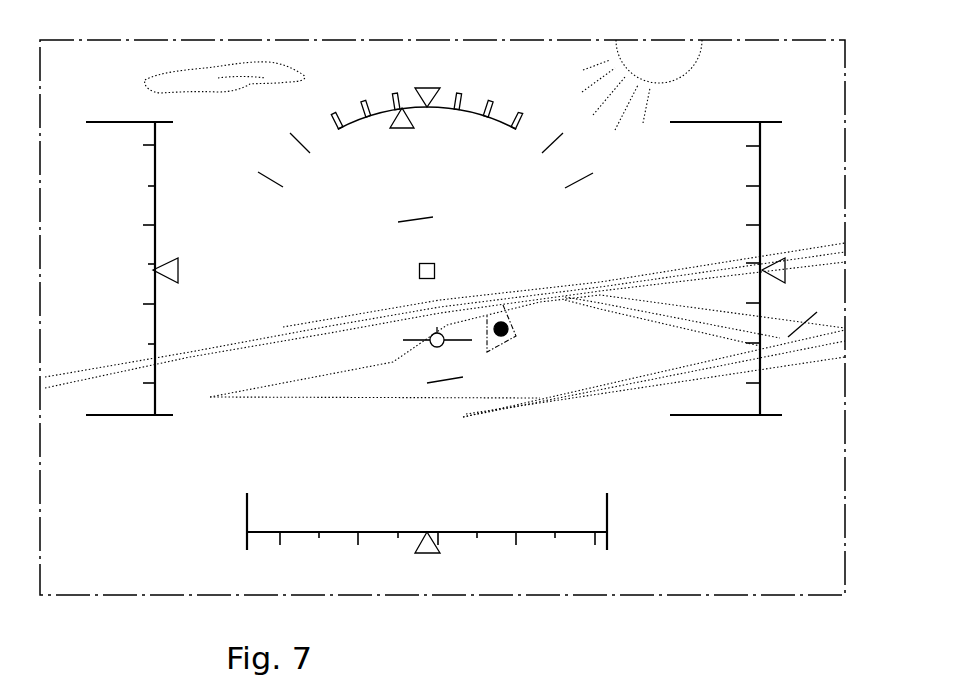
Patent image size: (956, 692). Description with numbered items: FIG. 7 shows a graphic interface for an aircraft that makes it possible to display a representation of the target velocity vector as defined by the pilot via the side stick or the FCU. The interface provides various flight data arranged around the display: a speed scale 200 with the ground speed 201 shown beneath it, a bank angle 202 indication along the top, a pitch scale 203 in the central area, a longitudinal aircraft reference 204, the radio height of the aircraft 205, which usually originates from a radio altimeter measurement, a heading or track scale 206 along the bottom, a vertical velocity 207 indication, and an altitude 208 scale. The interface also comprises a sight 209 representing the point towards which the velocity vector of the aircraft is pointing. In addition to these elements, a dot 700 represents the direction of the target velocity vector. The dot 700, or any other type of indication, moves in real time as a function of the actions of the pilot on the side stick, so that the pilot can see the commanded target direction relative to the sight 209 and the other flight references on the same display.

The speed scale 200 is at (118, 122).
The ground speed 201 is at (159, 483).
The bank angle 202 is at (381, 97).
The pitch scale 203 is at (416, 203).
The longitudinal aircraft reference 204 is at (451, 252).
The radio height of the aircraft 205 is at (458, 445).
The heading or track scale 206 is at (532, 558).
The vertical velocity 207 is at (802, 420).
The altitude 208 is at (744, 122).
The sight 209 is at (420, 353).
The dot 700 is at (519, 336).